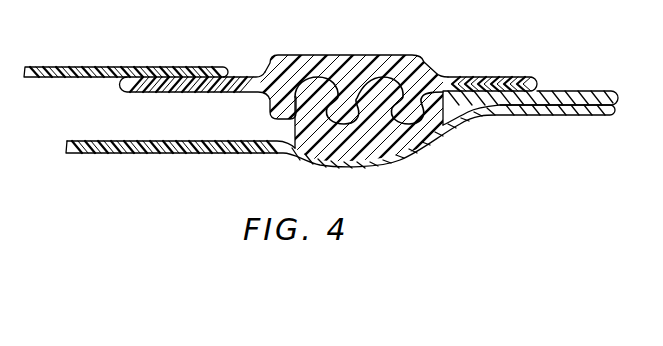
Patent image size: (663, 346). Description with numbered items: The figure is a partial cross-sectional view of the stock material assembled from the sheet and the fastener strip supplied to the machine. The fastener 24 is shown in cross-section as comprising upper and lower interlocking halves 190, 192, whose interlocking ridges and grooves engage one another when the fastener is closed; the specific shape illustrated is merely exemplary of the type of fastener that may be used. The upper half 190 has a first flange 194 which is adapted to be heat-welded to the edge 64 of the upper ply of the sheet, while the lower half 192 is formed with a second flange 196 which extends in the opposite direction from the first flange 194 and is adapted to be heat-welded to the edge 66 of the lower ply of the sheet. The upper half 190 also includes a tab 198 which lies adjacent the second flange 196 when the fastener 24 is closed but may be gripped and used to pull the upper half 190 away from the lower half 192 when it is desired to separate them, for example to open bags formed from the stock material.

The fastener 24 is at (461, 61).
The edge of the upper ply of sheet 64 is at (173, 67).
The edge of the lower ply of sheet 66 is at (168, 153).
The upper interlocking half 190 is at (358, 72).
The lower interlocking half 192 is at (352, 138).
The first flange 194 is at (192, 88).
The second flange 196 is at (598, 91).
The tab 198 is at (532, 77).